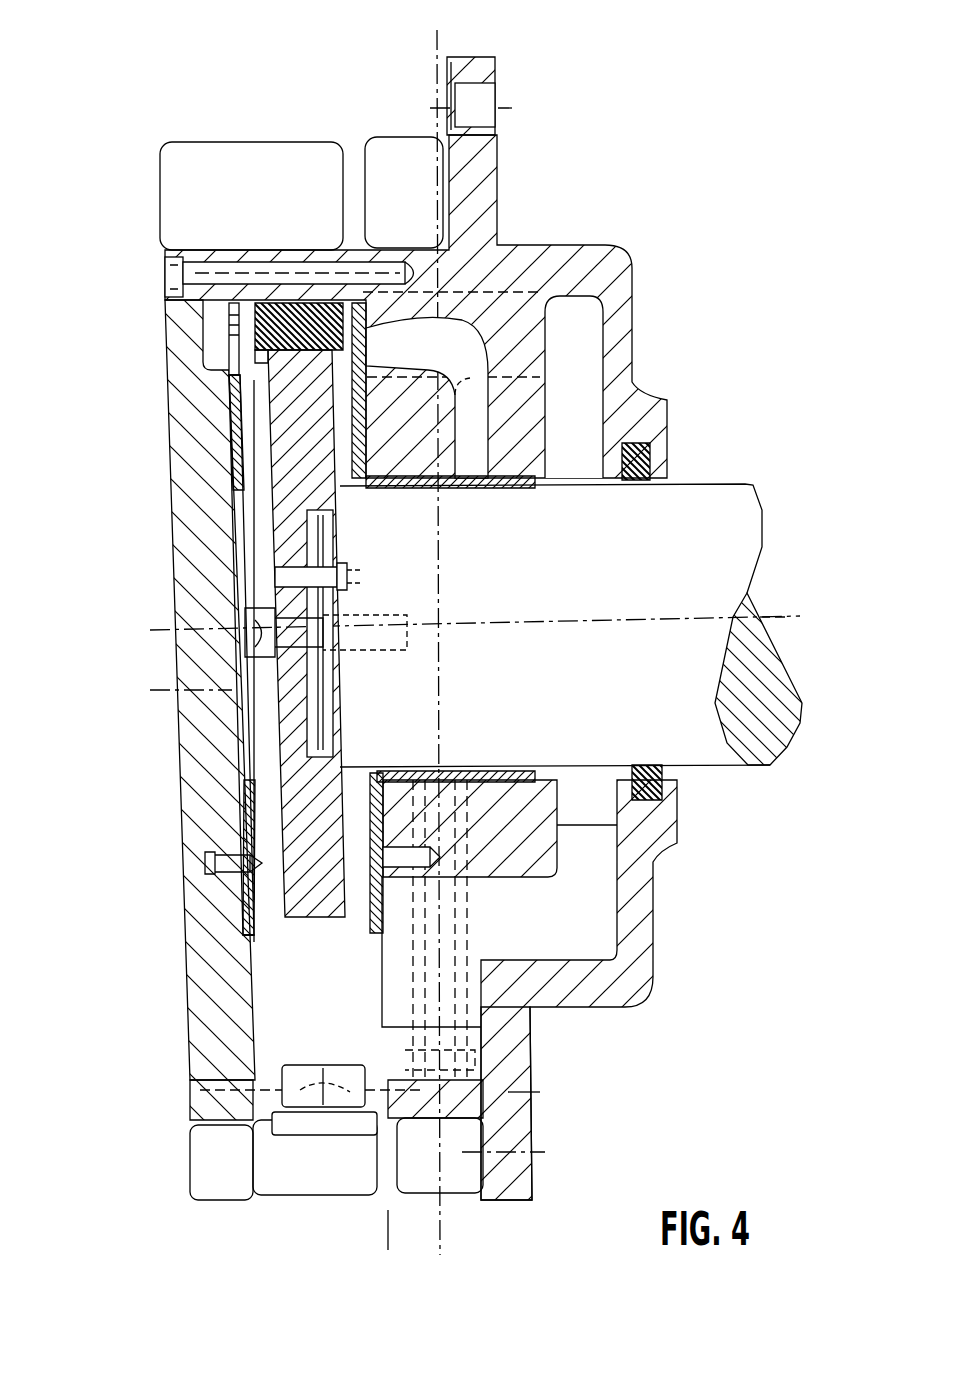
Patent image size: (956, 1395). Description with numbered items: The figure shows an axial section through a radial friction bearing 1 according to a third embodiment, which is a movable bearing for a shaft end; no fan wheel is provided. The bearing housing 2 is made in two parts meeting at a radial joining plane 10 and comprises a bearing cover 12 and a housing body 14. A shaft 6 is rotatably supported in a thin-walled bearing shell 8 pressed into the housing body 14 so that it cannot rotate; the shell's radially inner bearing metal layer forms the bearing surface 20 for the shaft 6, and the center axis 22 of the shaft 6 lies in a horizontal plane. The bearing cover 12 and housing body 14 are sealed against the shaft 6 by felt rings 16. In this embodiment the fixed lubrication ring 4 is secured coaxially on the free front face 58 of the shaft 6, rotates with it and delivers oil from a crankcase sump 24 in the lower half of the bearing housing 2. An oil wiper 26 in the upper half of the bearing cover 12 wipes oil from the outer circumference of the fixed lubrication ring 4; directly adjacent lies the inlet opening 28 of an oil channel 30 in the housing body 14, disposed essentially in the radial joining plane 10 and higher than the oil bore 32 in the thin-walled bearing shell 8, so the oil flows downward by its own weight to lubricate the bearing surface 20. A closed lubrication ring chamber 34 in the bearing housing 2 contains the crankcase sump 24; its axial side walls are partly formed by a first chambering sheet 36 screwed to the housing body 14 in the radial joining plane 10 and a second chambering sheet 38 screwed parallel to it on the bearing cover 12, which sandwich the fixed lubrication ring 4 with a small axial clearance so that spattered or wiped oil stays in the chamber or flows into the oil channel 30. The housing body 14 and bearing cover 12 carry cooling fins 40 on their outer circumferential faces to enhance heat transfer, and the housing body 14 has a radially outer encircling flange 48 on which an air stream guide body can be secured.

The radial friction bearing 1 is at (130, 100).
The bearing housing 2 is at (318, 108).
The fixed lubrication ring 4 is at (312, 900).
The shaft 6 is at (712, 752).
The thin-walled bearing shell 8 is at (497, 785).
The radial joining plane 10 is at (390, 1240).
The bearing cover 12 is at (215, 1100).
The housing body 14 is at (518, 1090).
The felt rings 16 is at (662, 785).
The bearing surface 20 is at (543, 873).
The center axis 22 is at (777, 613).
The crankcase sump 24 is at (300, 1033).
The oil wiper 26 is at (250, 326).
The inlet opening 28 is at (430, 320).
The oil channel 30 is at (470, 405).
The oil bore 32 is at (455, 492).
The lubrication ring chamber 34 is at (262, 455).
The first chambering sheet 36 is at (368, 910).
The second chambering sheet 38 is at (270, 925).
The cooling fins 40 is at (232, 160).
The encircling flange 48 is at (478, 72).
The free front face 58 is at (318, 683).